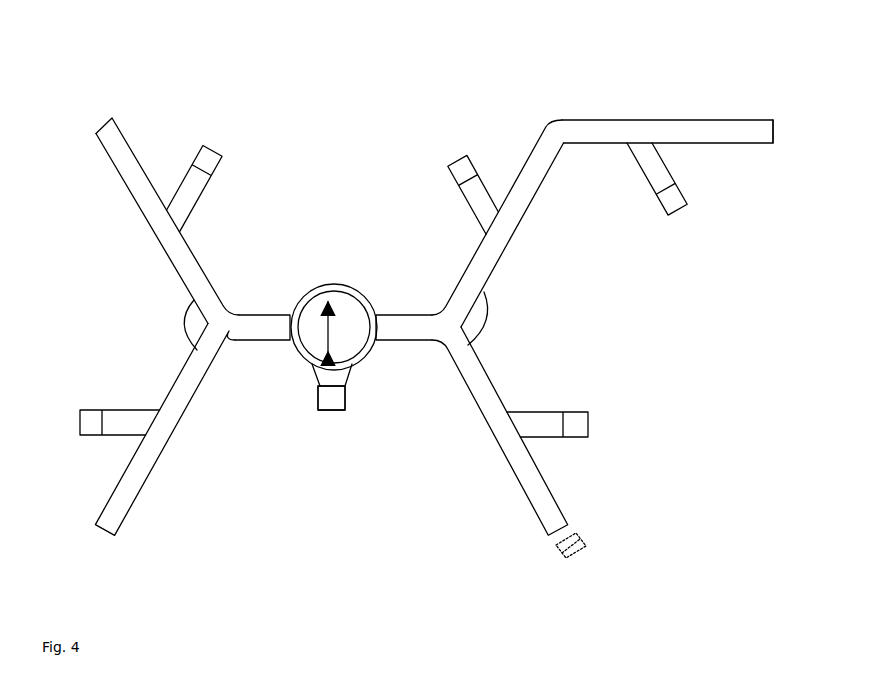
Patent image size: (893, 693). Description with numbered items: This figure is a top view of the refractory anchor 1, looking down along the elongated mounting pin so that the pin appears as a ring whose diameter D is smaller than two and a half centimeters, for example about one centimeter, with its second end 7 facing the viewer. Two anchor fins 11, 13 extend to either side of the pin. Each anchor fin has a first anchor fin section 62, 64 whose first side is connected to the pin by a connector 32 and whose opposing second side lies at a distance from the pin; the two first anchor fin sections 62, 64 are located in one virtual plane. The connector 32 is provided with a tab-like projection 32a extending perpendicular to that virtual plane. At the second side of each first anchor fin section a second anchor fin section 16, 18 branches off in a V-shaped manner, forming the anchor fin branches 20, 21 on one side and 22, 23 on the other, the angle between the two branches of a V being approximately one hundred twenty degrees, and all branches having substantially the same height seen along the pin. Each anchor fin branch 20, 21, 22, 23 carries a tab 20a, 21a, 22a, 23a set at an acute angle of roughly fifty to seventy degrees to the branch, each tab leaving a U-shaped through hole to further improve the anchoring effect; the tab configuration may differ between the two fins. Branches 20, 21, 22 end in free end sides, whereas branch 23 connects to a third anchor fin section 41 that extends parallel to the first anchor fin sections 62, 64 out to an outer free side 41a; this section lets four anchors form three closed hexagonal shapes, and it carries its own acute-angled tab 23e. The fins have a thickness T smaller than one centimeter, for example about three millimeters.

The refractory anchor 1 is at (742, 380).
The second end 7 is at (311, 320).
The anchor fin 11 is at (222, 235).
The anchor fin 13 is at (503, 152).
The second anchor fin section 16 is at (190, 491).
The second anchor fin section 18 is at (488, 479).
The anchor fin branch 20 is at (135, 498).
The tab 20a is at (122, 425).
The anchor fin branch 21 is at (143, 193).
The tab 21a is at (187, 188).
The anchor fin branch 22 is at (552, 507).
The tab 22a is at (533, 417).
The anchor fin branch 23 is at (487, 250).
The tab 23a is at (480, 198).
The tab 23e is at (655, 170).
The connector 32 is at (300, 363).
The tab-like projection 32a is at (326, 398).
The third anchor fin section 41 is at (653, 130).
The outer free side 41a is at (777, 126).
The first anchor fin section 62 is at (256, 314).
The first anchor fin section 64 is at (408, 330).
The diameter D is at (338, 327).
The thickness T is at (573, 560).